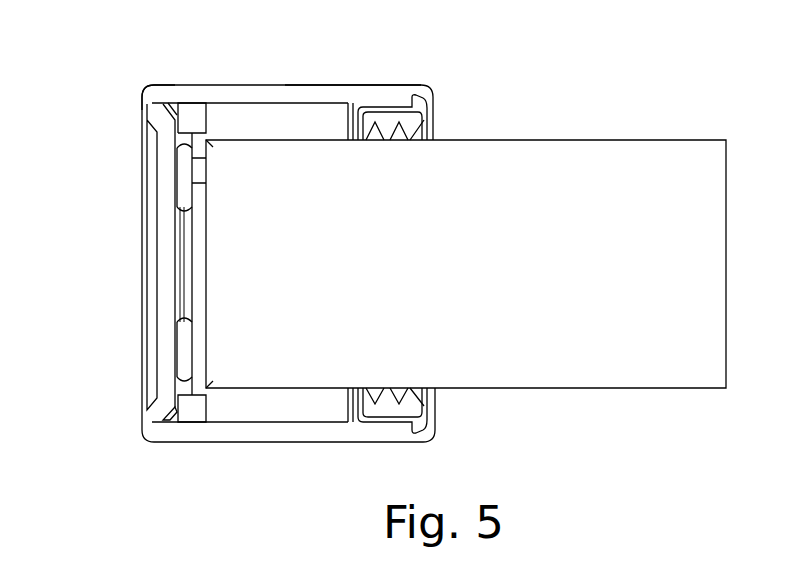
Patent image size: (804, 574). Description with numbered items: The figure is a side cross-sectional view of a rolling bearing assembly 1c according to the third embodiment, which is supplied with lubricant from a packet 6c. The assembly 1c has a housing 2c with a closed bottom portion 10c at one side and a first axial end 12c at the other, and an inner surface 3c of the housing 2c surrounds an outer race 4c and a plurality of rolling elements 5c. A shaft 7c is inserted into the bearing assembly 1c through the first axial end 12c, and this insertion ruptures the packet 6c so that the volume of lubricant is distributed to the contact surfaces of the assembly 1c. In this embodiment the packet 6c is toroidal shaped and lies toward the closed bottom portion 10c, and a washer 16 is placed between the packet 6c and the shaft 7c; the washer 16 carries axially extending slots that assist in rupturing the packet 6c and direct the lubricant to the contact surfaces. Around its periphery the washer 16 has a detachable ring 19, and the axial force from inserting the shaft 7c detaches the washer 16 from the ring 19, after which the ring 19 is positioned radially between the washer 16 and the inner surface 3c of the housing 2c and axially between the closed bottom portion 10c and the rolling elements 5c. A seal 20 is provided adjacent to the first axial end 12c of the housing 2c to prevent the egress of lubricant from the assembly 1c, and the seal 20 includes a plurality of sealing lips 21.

The bearing assembly 1c is at (531, 118).
The housing 2c is at (140, 107).
The inner surface of housing 3c is at (308, 87).
The outer race 4c is at (260, 87).
The rolling elements 5c is at (270, 408).
The packet 6c is at (182, 172).
The shaft 7c is at (663, 148).
The closed bottom portion of housing 10c is at (142, 420).
The first axial end of housing 12c is at (155, 96).
The washer 16 is at (182, 331).
The detachable ring 19 is at (177, 413).
The seal 20 is at (428, 414).
The sealing lips 21 is at (350, 400).